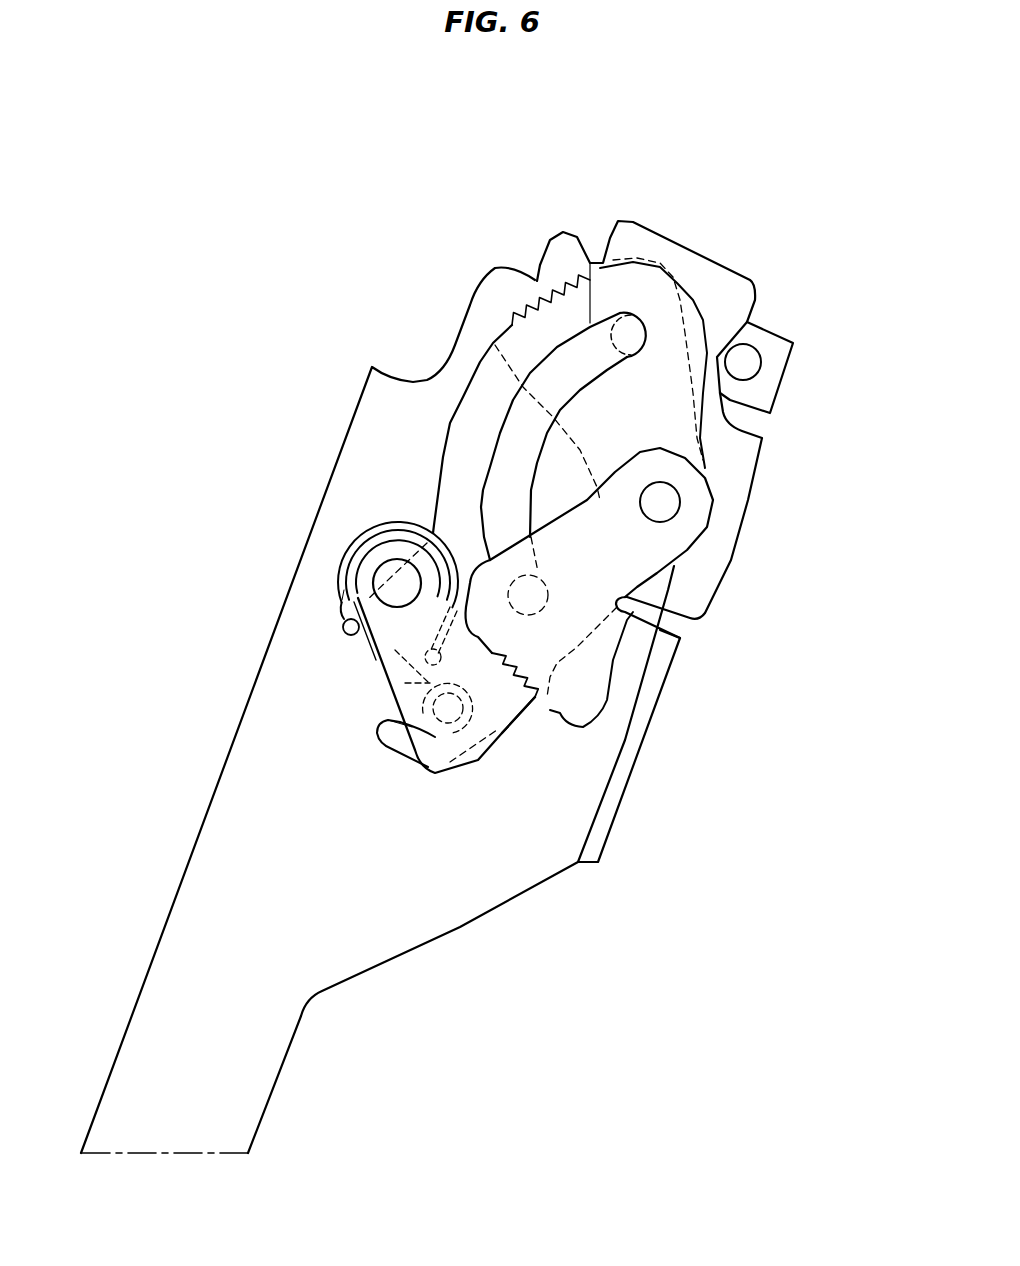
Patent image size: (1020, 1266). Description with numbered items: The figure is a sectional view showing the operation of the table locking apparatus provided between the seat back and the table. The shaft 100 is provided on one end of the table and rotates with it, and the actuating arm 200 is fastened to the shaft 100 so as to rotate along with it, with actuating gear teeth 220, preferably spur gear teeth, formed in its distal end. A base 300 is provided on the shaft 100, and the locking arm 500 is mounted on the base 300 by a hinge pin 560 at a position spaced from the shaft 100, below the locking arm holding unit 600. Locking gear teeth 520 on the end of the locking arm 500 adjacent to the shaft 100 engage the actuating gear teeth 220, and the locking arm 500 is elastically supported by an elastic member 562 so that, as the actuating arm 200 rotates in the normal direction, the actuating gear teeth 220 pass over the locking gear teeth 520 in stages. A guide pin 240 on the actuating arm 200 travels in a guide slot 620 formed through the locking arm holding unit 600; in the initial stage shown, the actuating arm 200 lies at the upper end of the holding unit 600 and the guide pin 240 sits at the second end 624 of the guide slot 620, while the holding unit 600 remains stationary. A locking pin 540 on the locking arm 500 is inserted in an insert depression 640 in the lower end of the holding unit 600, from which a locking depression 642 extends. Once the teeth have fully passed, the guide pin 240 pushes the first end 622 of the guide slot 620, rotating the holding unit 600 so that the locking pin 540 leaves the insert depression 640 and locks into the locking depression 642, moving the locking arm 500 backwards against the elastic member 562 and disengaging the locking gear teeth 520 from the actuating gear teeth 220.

The shaft 100 is at (700, 503).
The actuating arm 200 is at (663, 280).
The actuating gear teeth 220 is at (535, 273).
The guide pin 240 is at (727, 340).
The base 300 is at (252, 1093).
The locking arm 500 is at (393, 670).
The locking gear teeth 520 is at (540, 715).
The locking pin 540 is at (450, 714).
The hinge pin 560 is at (395, 582).
The elastic member 562 is at (357, 540).
The locking arm holding unit 600 is at (488, 377).
The guide slot 620 is at (492, 445).
The first end of the guide slot 622 is at (540, 567).
The second end of the guide slot 624 is at (600, 268).
The insert depression 640 is at (397, 723).
The locking depression 642 is at (413, 673).